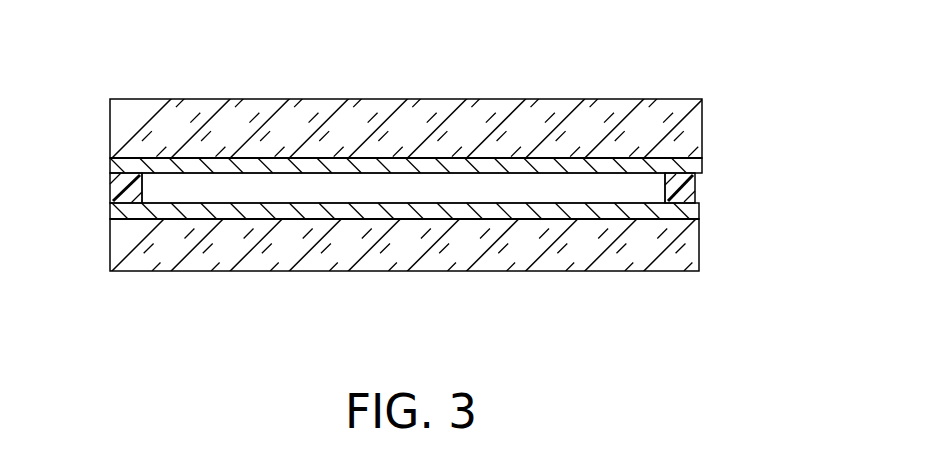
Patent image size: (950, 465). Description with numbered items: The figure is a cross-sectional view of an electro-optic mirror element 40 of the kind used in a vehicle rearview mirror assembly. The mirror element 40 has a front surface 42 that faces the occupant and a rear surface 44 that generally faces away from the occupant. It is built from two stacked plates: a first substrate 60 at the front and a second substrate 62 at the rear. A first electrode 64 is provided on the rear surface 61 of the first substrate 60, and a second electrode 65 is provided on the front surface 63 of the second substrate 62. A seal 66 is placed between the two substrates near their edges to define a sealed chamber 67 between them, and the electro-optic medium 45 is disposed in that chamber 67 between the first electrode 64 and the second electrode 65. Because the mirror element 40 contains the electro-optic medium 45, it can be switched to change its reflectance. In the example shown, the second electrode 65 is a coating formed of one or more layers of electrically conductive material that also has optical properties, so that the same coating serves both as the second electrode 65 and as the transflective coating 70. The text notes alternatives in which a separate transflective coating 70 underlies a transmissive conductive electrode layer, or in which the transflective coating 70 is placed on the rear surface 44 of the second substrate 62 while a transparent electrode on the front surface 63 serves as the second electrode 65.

The electro-optic mirror element 40 is at (406, 29).
The front surface 42 is at (630, 99).
The rear surface 44 is at (173, 271).
The electro-optic medium 45 is at (388, 192).
The first substrate 60 is at (568, 118).
The rear surface of first substrate 61 is at (110, 161).
The second substrate 62 is at (212, 244).
The front surface of second substrate 63 is at (680, 217).
The first electrode 64 is at (702, 168).
The second electrode 65 is at (480, 199).
The seal 66 is at (110, 187).
The sealed chamber 67 is at (305, 192).
The transflective coating 70 is at (690, 208).